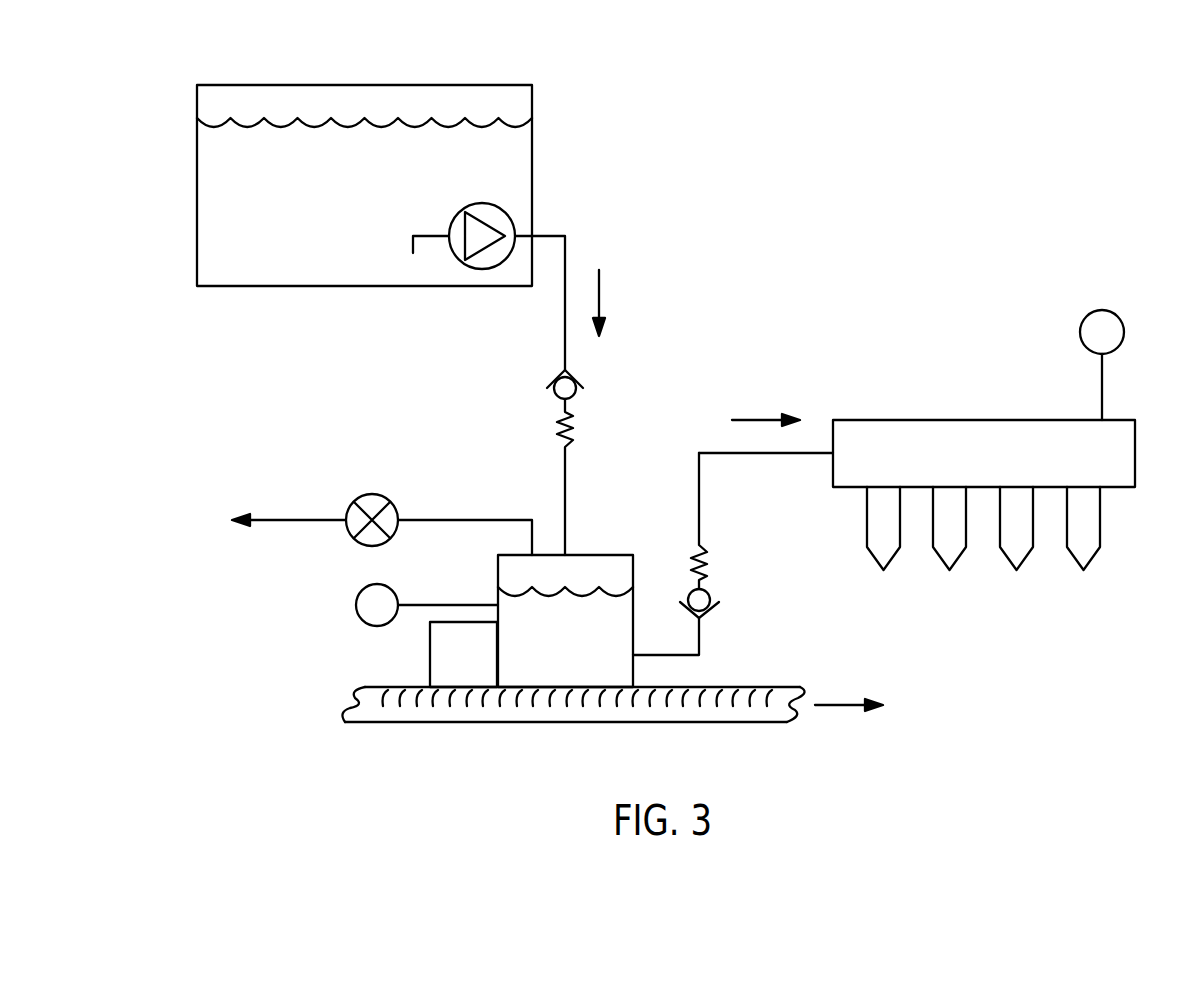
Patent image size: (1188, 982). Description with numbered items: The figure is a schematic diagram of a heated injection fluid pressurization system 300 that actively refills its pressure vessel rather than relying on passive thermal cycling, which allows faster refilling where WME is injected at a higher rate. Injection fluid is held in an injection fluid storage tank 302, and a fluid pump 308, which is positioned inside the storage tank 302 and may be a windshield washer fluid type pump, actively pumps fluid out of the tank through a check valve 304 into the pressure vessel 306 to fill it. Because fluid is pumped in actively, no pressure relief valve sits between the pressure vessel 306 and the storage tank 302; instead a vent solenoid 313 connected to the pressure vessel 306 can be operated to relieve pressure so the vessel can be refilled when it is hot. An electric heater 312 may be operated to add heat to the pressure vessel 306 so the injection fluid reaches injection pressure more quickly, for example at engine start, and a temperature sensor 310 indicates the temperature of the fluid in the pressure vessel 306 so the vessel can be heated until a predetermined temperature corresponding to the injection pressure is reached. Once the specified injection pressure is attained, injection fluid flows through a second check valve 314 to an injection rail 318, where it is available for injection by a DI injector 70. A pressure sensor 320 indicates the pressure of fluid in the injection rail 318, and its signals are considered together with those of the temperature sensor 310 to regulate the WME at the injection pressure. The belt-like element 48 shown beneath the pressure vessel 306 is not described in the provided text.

The heated injection fluid pressurization system 300 is at (1035, 133).
The injection fluid storage tank 302 is at (347, 287).
The check valve 304 is at (558, 375).
The pressure vessel 306 is at (617, 553).
The fluid pump 308 is at (483, 202).
The temperature sensor 310 is at (377, 584).
The electric heater 312 is at (463, 654).
The vent solenoid 313 is at (373, 494).
The check valve 314 is at (711, 589).
The injection rail 318 is at (917, 450).
The pressure sensor 320 is at (1102, 310).
The DI injector 70 is at (1103, 517).
The conveyor belt 48 is at (750, 723).